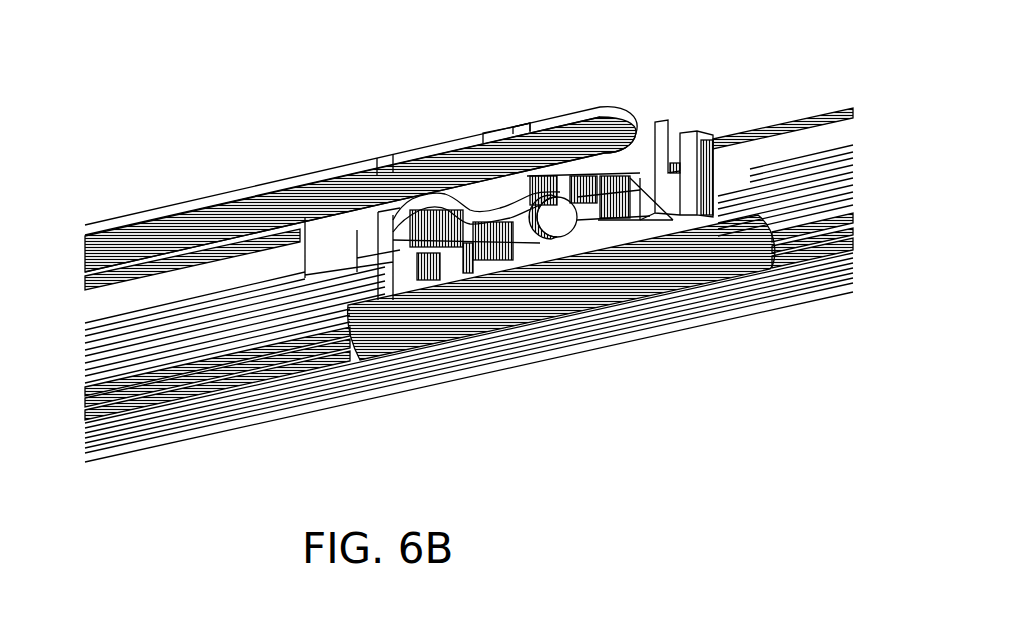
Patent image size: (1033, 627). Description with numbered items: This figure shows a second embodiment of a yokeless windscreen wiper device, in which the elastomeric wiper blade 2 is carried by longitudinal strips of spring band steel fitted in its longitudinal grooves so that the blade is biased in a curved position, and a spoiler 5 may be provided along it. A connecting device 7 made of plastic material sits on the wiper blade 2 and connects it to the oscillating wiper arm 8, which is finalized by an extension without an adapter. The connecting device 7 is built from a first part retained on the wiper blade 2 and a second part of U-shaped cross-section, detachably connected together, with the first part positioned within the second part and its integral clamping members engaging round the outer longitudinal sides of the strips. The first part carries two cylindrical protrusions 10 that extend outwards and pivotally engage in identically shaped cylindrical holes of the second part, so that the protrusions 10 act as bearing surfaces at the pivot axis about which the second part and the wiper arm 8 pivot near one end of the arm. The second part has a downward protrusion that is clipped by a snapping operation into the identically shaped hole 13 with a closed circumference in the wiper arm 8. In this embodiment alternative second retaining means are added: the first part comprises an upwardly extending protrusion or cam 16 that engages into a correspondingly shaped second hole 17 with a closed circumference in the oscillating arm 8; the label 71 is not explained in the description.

The wiper blade 2 is at (787, 305).
The spoiler 5 is at (797, 143).
The oscillating wiper arm 8 is at (200, 204).
The second hole 17 is at (337, 176).
The hole 13 is at (517, 128).
The cylindrical protrusions 10 is at (558, 270).
The connecting device 7 is at (533, 314).
The bore 71 is at (557, 237).
The protrusion 16 is at (676, 125).